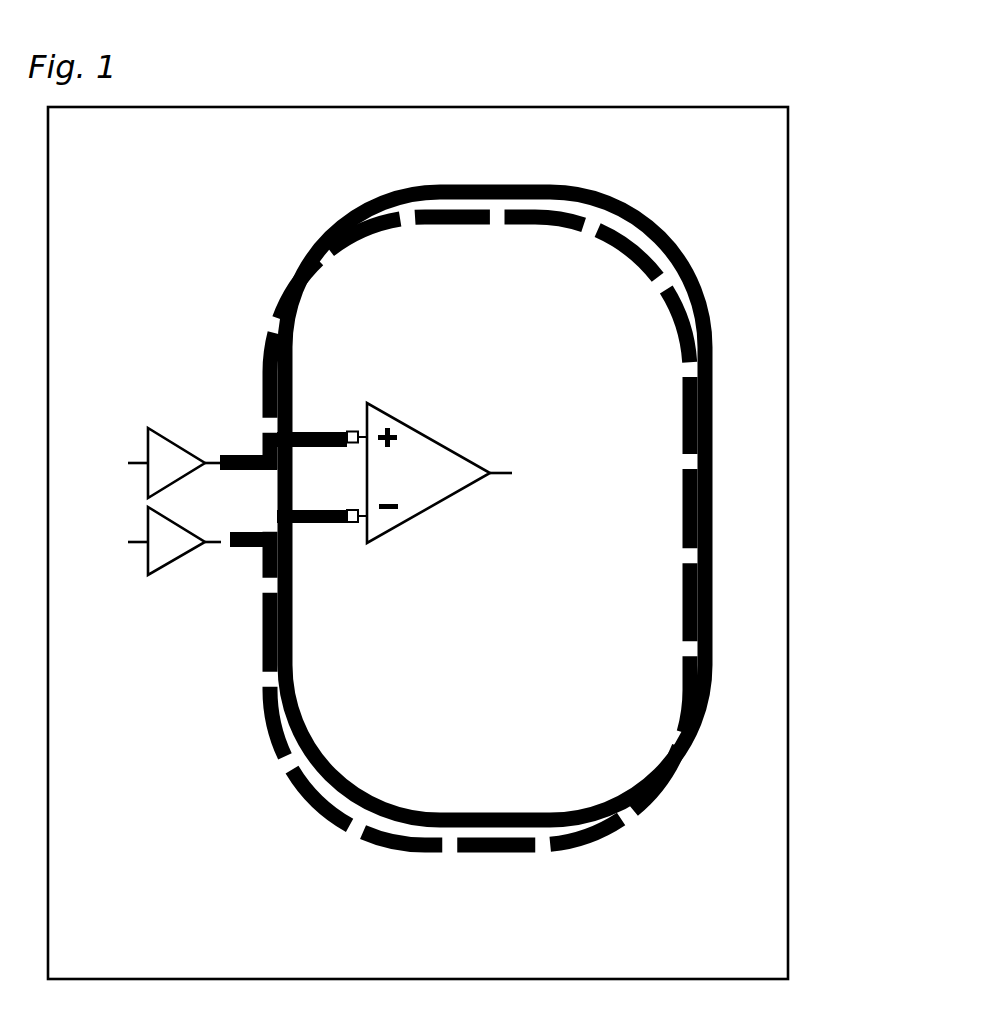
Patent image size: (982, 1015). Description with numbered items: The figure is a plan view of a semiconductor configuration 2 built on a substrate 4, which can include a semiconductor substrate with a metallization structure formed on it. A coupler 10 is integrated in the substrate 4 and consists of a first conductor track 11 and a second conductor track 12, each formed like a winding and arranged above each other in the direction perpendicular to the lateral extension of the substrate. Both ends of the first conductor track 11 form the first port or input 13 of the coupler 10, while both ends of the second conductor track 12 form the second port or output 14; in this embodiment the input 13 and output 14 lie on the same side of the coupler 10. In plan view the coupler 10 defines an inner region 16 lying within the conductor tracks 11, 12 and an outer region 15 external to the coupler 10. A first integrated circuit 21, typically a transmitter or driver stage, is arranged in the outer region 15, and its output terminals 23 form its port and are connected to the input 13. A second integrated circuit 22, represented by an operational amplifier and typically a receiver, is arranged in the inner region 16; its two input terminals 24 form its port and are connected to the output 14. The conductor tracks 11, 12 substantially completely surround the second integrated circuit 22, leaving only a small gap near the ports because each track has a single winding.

The semiconductor configuration 2 is at (652, 89).
The substrate 4 is at (775, 430).
The coupler 10 is at (673, 219).
The first conductor track 11 is at (532, 222).
The second conductor track 12 is at (442, 185).
The input 13 is at (227, 455).
The output 14 is at (330, 432).
The outer region 15 is at (198, 248).
The inner region 16 is at (545, 360).
The first integrated circuit 21 is at (162, 433).
The second integrated circuit 22 is at (448, 447).
The output terminals 23 is at (210, 460).
The input terminals 24 is at (353, 432).